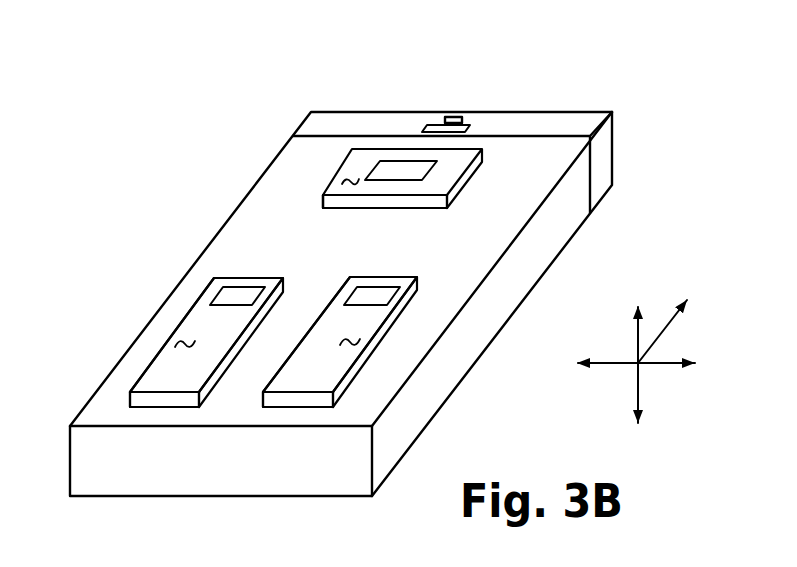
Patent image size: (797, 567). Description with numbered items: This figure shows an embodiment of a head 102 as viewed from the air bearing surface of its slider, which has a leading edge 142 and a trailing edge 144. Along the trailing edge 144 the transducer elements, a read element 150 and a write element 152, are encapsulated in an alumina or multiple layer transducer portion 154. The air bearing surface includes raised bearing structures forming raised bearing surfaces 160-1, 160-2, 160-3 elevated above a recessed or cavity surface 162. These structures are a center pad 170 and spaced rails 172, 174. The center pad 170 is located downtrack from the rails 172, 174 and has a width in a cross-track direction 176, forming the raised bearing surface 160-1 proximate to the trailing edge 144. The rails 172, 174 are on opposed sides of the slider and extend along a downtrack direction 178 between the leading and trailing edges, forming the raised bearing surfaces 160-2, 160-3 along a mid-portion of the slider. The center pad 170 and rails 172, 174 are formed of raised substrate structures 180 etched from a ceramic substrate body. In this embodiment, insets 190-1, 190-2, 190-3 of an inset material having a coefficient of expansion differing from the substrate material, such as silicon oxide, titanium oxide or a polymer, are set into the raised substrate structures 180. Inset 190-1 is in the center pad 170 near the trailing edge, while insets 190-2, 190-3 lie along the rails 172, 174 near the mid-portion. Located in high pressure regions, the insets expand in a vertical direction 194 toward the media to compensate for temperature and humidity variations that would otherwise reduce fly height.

The head 102 is at (676, 100).
The leading edge 142 is at (232, 475).
The trailing edge 144 is at (393, 112).
The read element 150 is at (476, 128).
The write element 152 is at (455, 114).
The transducer portion 154 is at (530, 130).
The raised bearing surface 160-1 is at (348, 180).
The raised bearing surface 160-2 is at (180, 340).
The raised bearing surface 160-3 is at (352, 337).
The recessed or cavity surface 162 is at (388, 255).
The center pad 170 is at (320, 210).
The rail 172 is at (157, 378).
The rail 174 is at (322, 376).
The cross-track direction 176 is at (668, 367).
The downtrack direction 178 is at (663, 333).
The raised substrate structure 180 is at (323, 202).
The inset 190-1 is at (424, 175).
The inset 190-2 is at (223, 292).
The inset 190-3 is at (383, 293).
The vertical direction 194 is at (643, 407).